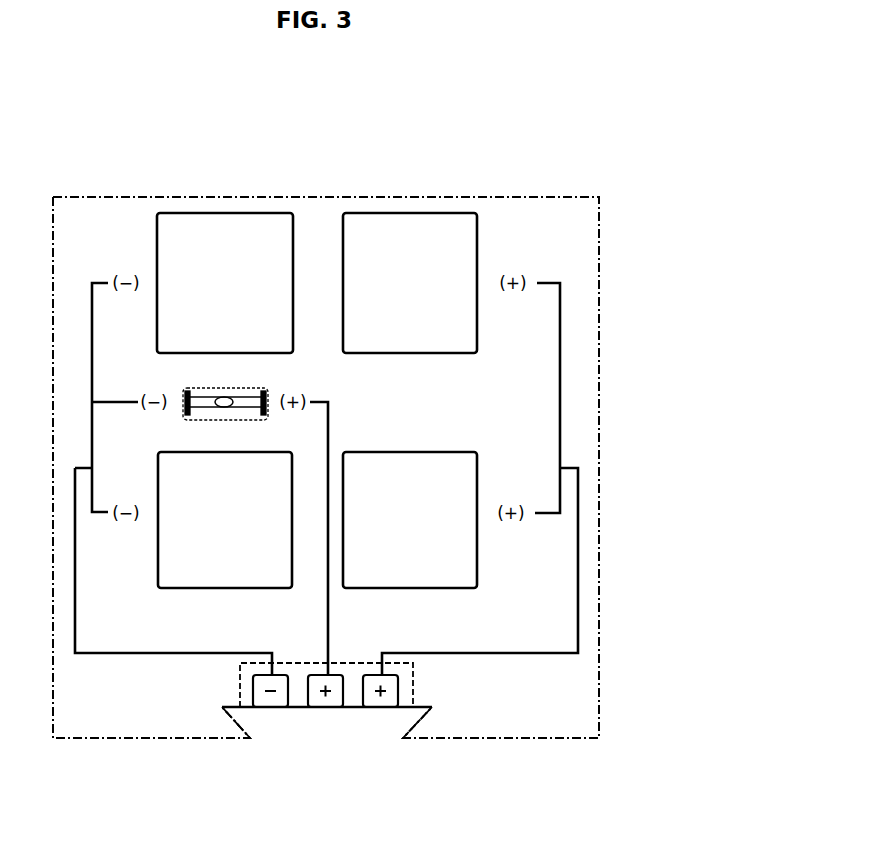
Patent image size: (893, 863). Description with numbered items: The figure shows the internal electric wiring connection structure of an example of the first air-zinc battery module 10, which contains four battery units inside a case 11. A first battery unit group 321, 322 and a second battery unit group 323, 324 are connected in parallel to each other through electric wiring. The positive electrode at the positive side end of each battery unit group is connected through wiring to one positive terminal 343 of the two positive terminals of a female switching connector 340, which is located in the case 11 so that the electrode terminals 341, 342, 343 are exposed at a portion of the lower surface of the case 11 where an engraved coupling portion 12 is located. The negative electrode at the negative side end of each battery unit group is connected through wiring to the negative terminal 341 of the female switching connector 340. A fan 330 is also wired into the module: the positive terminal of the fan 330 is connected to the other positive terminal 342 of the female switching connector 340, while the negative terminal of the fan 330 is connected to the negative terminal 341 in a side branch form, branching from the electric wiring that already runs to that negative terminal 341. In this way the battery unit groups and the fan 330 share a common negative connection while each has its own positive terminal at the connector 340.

The battery pack 10 is at (548, 98).
The case 11 is at (90, 196).
The engraved coupling portion 12 is at (318, 722).
The first battery unit group 321 is at (412, 235).
The first battery unit group 322 is at (226, 235).
The second battery unit group 323 is at (220, 565).
The second battery unit group 324 is at (420, 562).
The fan 330 is at (222, 405).
The female switching connector 340 is at (413, 673).
The negative terminal 341 is at (272, 707).
The positive terminal 342 is at (337, 707).
The positive terminal 343 is at (392, 707).